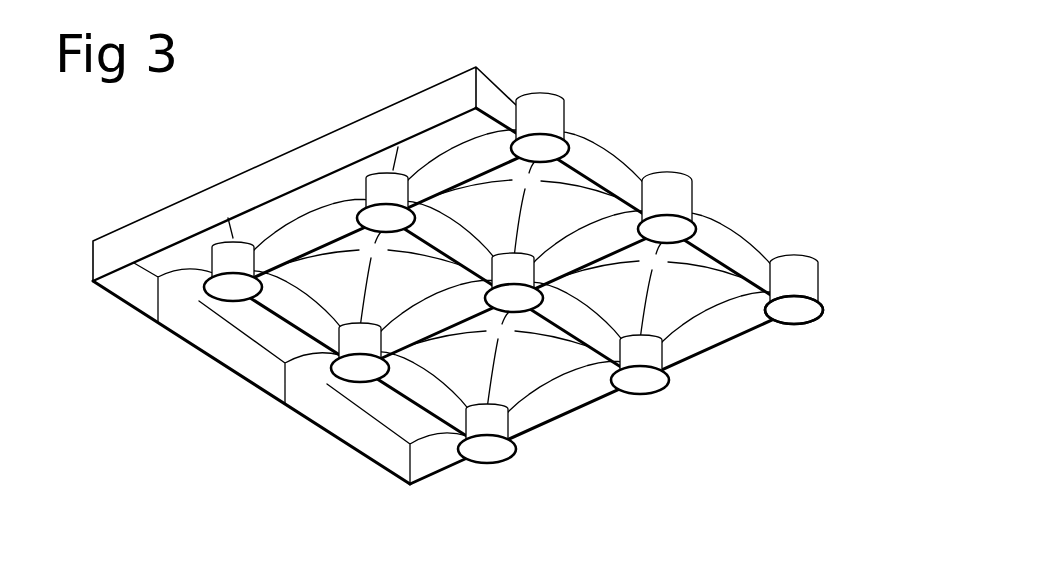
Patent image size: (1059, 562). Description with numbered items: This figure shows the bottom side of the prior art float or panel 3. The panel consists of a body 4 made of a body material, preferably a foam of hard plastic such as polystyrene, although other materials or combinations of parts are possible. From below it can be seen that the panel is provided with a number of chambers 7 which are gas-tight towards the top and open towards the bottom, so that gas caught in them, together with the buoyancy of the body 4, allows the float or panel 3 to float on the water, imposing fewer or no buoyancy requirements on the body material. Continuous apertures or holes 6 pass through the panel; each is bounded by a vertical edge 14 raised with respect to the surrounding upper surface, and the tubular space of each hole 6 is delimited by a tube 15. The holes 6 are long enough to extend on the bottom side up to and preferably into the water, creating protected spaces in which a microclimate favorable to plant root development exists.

The float or panel 3 is at (645, 145).
The body 4 is at (150, 233).
The continuous apertures or holes 6 is at (642, 387).
The chambers 7 is at (342, 273).
The vertical edge 14 is at (543, 97).
The tube 15 is at (820, 322).